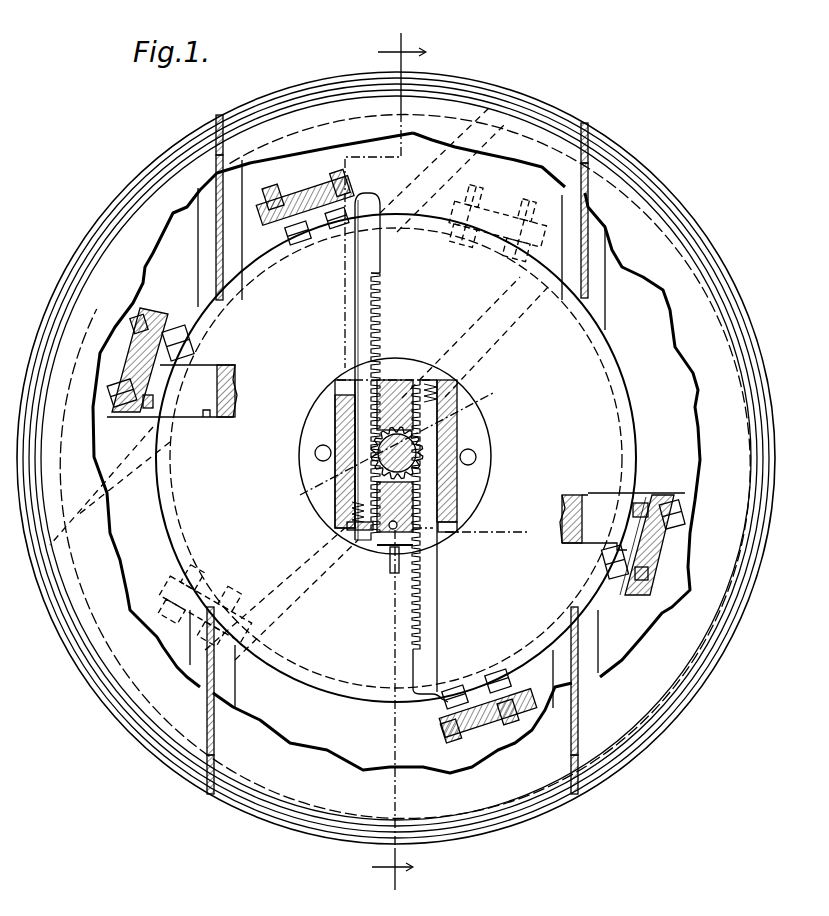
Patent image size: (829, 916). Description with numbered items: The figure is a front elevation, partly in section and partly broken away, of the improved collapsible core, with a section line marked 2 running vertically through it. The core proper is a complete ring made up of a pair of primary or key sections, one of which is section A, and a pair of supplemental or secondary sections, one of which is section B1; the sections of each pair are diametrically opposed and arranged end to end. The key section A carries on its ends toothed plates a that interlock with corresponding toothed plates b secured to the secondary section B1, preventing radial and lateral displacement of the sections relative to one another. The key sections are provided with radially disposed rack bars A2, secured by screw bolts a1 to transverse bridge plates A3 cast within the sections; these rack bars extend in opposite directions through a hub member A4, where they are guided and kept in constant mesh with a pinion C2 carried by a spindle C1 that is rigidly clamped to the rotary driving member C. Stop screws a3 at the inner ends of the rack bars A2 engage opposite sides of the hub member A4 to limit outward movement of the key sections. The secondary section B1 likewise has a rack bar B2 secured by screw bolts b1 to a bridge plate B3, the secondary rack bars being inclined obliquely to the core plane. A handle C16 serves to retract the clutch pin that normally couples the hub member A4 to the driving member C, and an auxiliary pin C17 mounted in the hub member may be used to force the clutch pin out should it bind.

The key section A is at (553, 116).
The rack bar A2 is at (387, 250).
The bridge plate A3 is at (302, 192).
The hub member A4 is at (457, 405).
The toothed plate a is at (216, 257).
The screw bolt a1 is at (323, 232).
The stop screw a3 is at (438, 388).
The secondary section B1 is at (698, 240).
The rack bar B2 is at (215, 373).
The bridge plate B3 is at (140, 363).
The toothed plate b is at (216, 158).
The screw bolt b1 is at (190, 345).
The driving member C is at (493, 471).
The spindle C1 is at (347, 525).
The pinion C2 is at (370, 432).
The handle C16 is at (390, 574).
The auxiliary pin C17 is at (390, 553).
The section line 2- 2 is at (385, 462).